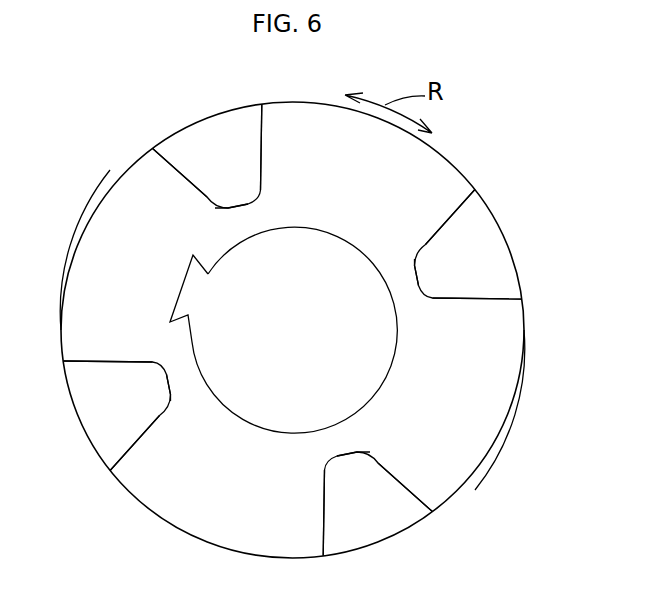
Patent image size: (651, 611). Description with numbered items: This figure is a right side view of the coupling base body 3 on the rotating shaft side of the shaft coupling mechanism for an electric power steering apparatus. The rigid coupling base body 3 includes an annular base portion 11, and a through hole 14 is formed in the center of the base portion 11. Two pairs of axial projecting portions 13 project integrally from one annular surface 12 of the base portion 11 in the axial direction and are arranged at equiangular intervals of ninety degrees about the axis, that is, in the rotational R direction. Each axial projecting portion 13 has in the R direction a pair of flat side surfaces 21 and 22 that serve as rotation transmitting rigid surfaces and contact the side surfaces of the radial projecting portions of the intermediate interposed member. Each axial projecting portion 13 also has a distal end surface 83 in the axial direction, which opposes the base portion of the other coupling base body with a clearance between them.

The coupling base body 3 is at (89, 169).
The annular base portion 11 is at (100, 265).
The annular surface 12 is at (470, 410).
The axial projecting portion 13 is at (205, 148).
The through hole 14 is at (260, 388).
The flat side surface 21 is at (273, 148).
The flat side surface 22 is at (192, 185).
The distal end surface 83 is at (237, 158).